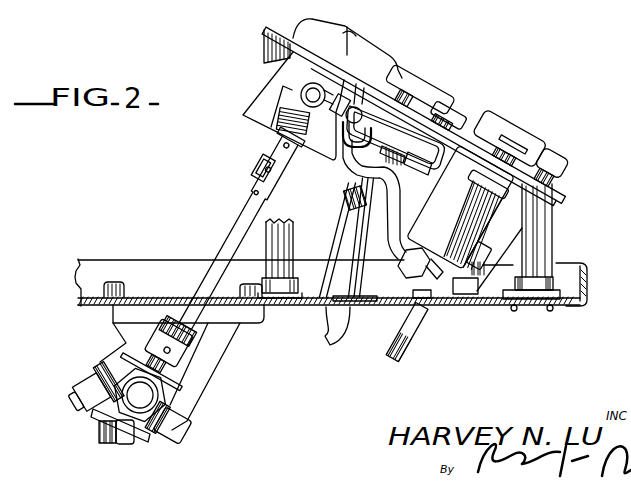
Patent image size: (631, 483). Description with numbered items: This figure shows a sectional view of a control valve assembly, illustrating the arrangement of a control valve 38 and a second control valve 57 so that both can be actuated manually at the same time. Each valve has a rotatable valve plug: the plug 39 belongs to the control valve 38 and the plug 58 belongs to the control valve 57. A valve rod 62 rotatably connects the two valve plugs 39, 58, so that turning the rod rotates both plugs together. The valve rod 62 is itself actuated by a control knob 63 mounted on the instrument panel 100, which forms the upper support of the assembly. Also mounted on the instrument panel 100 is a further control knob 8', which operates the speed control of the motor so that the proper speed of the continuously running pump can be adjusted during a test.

The instrument panel 100 is at (563, 198).
The control knob 63 is at (383, 54).
The control valve 57 is at (300, 76).
The rotatable valve plug 58 is at (280, 122).
The valve rod 62 is at (240, 204).
The control knob 8' is at (537, 149).
The rotatable valve plug 39 is at (158, 350).
The control valve 38 is at (147, 441).